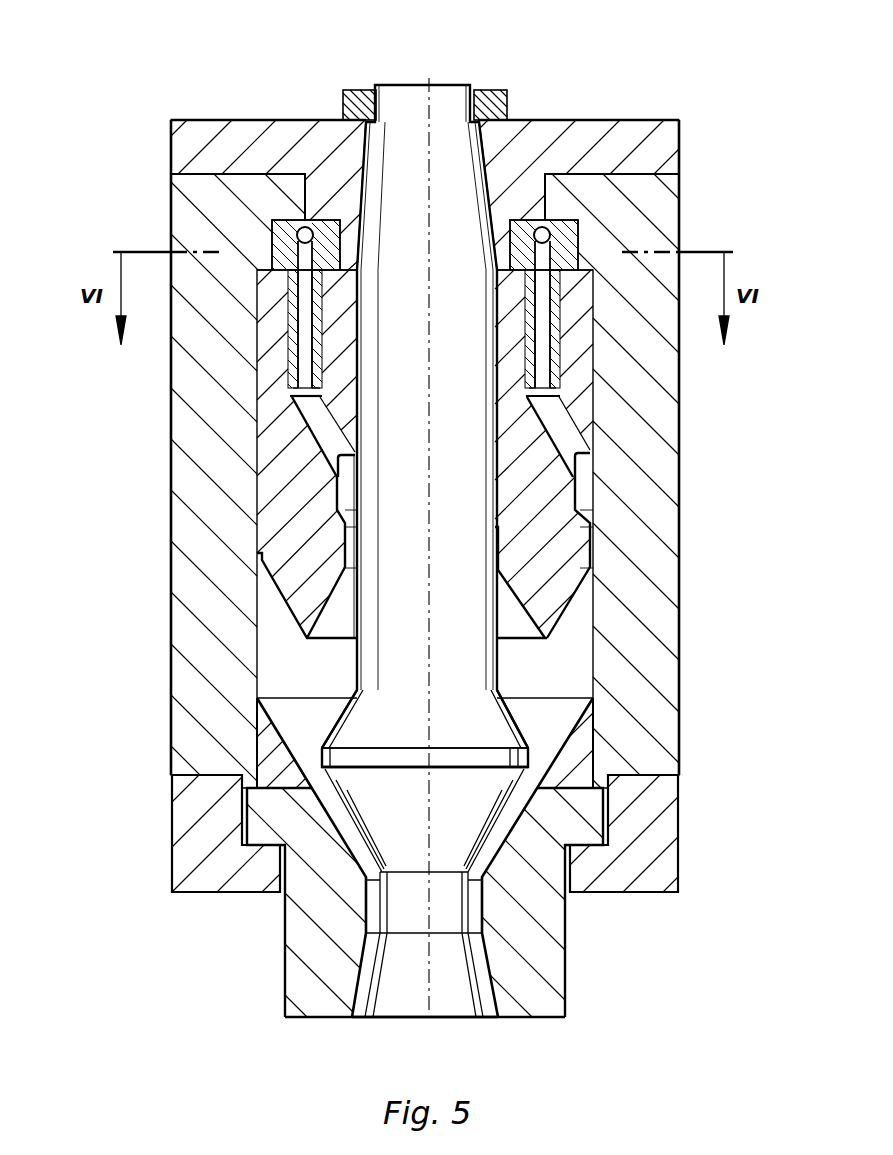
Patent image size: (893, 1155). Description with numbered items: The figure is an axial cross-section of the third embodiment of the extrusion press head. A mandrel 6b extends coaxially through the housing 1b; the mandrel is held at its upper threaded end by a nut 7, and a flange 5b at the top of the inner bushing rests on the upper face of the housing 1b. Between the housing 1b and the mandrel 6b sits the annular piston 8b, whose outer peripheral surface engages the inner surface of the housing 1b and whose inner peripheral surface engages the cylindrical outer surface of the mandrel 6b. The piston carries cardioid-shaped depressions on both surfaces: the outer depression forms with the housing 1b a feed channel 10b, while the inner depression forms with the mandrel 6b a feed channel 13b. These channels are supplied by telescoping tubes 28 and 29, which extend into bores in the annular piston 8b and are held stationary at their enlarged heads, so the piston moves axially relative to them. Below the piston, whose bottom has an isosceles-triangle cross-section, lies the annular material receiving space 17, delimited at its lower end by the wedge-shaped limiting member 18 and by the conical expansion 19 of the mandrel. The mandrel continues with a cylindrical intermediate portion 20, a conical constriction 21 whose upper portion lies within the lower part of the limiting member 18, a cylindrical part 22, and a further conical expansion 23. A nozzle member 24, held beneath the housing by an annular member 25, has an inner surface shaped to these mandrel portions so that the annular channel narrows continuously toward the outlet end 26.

The housing 1b is at (657, 660).
The flange 5b is at (190, 147).
The mandrel 6b is at (440, 463).
The nut 7 is at (487, 103).
The annular piston 8b is at (275, 528).
The feed channel 10b is at (588, 487).
The feed channel 13b is at (337, 498).
The annular material receiving space 17 is at (580, 638).
The limiting member 18 is at (262, 746).
The conical expansion 19 is at (437, 733).
The cylindrical intermediate portion 20 is at (472, 755).
The conical constriction 21 is at (435, 831).
The cylindrical part 22 is at (435, 912).
The conical expansion 23 is at (435, 986).
The nozzle member 24 is at (308, 955).
The annular member 25 is at (198, 833).
The outlet end 26 is at (352, 1020).
The telescoping tube 28 is at (567, 233).
The telescoping tube 29 is at (285, 240).